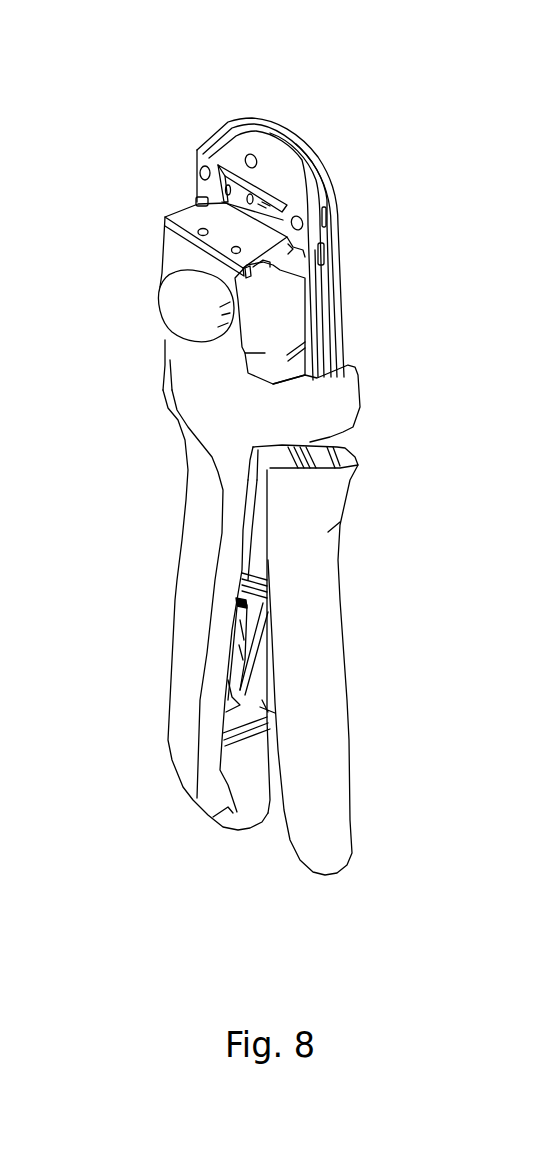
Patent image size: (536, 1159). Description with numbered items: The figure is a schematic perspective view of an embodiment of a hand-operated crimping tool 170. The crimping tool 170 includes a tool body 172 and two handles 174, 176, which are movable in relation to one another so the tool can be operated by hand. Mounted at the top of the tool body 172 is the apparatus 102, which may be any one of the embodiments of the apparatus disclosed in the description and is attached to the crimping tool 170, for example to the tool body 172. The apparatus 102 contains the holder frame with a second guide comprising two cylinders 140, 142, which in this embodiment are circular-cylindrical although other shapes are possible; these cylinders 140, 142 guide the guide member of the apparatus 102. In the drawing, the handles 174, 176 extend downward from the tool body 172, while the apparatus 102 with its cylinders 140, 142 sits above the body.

The crimping tool 170 is at (188, 102).
The apparatus 102 is at (242, 223).
The cylinder 142 is at (202, 229).
The cylinder 140 is at (287, 250).
The tool body 172 is at (228, 389).
The handle 174 is at (192, 619).
The handle 176 is at (295, 582).